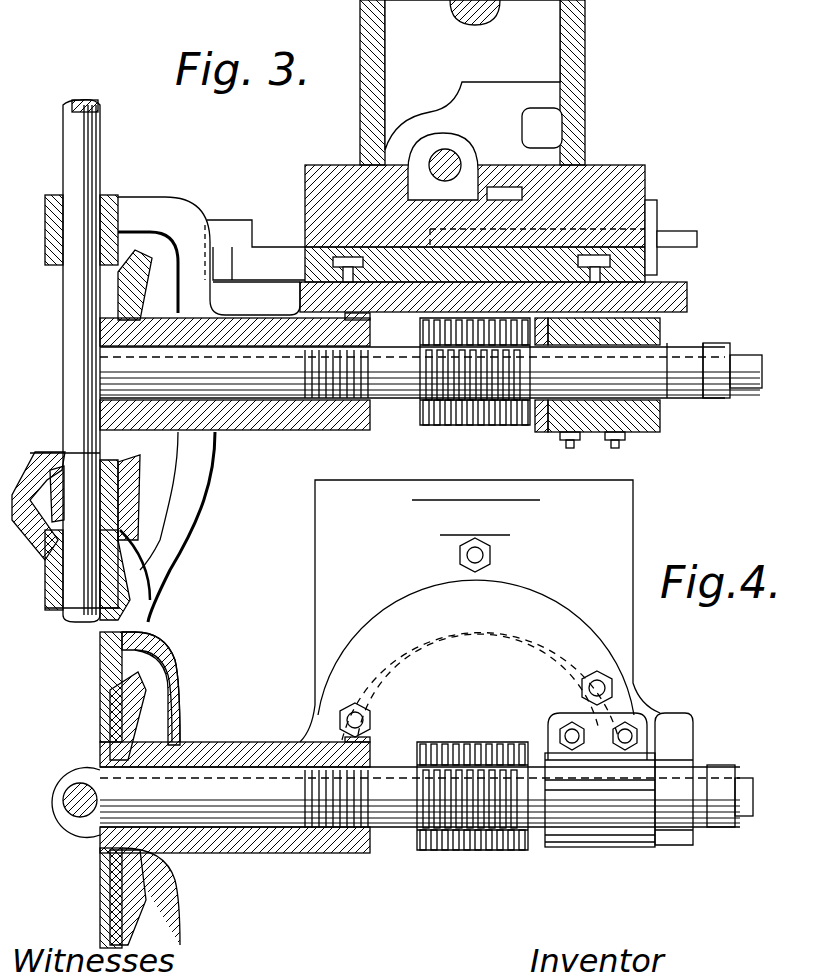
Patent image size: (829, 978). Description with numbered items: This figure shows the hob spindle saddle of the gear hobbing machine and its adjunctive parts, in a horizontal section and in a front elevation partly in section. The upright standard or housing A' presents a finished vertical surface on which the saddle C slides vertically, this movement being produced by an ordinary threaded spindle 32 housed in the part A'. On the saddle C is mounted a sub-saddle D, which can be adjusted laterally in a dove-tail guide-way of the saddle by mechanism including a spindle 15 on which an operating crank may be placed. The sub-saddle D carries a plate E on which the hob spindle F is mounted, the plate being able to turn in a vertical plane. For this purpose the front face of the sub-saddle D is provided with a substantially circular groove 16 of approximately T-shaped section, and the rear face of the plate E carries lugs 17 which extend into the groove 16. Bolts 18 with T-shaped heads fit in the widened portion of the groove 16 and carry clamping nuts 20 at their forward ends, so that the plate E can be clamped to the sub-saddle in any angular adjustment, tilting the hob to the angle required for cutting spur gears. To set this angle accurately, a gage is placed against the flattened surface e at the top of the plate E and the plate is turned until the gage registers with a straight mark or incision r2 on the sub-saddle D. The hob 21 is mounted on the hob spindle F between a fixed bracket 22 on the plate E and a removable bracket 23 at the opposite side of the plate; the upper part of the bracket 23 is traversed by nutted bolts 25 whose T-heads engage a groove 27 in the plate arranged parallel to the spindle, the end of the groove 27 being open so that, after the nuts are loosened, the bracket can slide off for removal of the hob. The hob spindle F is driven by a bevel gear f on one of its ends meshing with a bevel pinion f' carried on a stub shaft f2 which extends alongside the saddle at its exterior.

In FIG. 3, the upright standard or housing A' is at (473, 75).
In FIG. 3, the vertically slidable saddle C is at (318, 178).
In FIG. 3, the sub-saddle D is at (305, 245).
In FIG. 4, the sub-saddle D is at (480, 611).
In FIG. 3, the hob-carrying plate E is at (690, 296).
In FIG. 4, the hob-carrying plate E is at (480, 634).
In FIG. 3, the hob spindle F is at (668, 392).
In FIG. 4, the hob spindle F is at (405, 830).
In FIG. 3, the bevel gear f is at (85, 361).
In FIG. 4, the bevel gear f is at (117, 790).
In FIG. 3, the stub shaft f2 is at (68, 347).
In FIG. 4, the stub shaft f2 is at (72, 790).
In FIG. 3, the bevel pinion f' is at (71, 520).
In FIG. 4, the flattened surface e is at (470, 530).
In FIG. 4, the straight mark or incision r2 is at (472, 500).
In FIG. 3, the spindle 15 is at (675, 235).
In FIG. 3, the circular groove 16 is at (610, 262).
In FIG. 3, the lugs 17 is at (305, 295).
In FIG. 4, the lugs 17 is at (335, 665).
In FIG. 4, the bolts 18 is at (492, 552).
In FIG. 4, the clamping nuts 20 is at (462, 550).
In FIG. 3, the hob 21 is at (425, 420).
In FIG. 4, the hob 21 is at (488, 750).
In FIG. 3, the fixed bracket 22 is at (292, 433).
In FIG. 4, the fixed bracket 22 is at (295, 855).
In FIG. 3, the removable bracket 23 is at (598, 435).
In FIG. 4, the removable bracket 23 is at (603, 848).
In FIG. 3, the nutted bolts 25 is at (570, 440).
In FIG. 4, the nutted bolts 25 is at (572, 732).
In FIG. 4, the groove 27 is at (690, 738).
In FIG. 3, the threaded spindle 32 is at (440, 150).